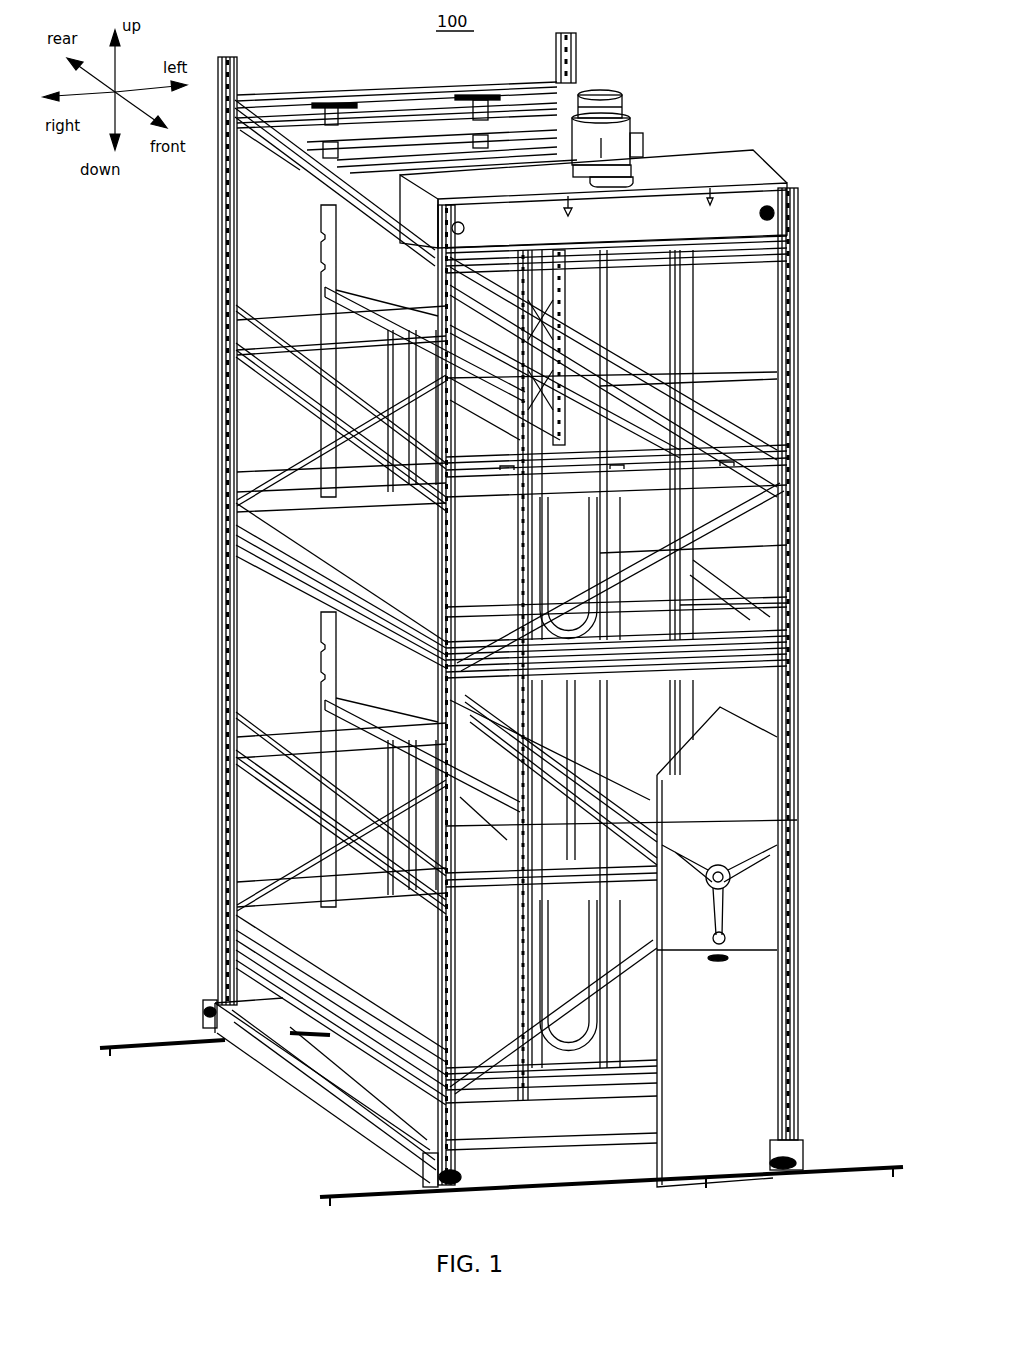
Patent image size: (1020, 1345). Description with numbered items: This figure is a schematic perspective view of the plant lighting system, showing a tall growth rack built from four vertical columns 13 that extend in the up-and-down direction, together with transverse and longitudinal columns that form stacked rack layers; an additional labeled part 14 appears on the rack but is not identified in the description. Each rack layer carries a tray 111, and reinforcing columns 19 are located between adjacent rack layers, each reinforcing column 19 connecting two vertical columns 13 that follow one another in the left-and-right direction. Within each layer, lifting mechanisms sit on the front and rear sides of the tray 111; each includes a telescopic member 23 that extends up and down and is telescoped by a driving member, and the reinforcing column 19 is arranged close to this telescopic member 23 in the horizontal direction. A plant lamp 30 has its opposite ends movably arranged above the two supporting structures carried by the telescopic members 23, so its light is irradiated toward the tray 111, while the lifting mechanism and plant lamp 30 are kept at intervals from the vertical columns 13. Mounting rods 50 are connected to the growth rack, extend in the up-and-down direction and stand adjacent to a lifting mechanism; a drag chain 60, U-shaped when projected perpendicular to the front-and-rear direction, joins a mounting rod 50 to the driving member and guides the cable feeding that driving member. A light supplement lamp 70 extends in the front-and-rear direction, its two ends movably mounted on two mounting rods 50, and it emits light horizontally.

The vertical columns 13 is at (237, 418).
The upright post 14 is at (237, 178).
The reinforcing columns 19 is at (737, 510).
The telescopic member 23 is at (400, 474).
The plant lamp 30 is at (237, 352).
The mounting rods 50 is at (321, 240).
The drag chain 60 is at (790, 607).
The light supplement lamp 70 is at (325, 292).
The tray 111 is at (237, 520).